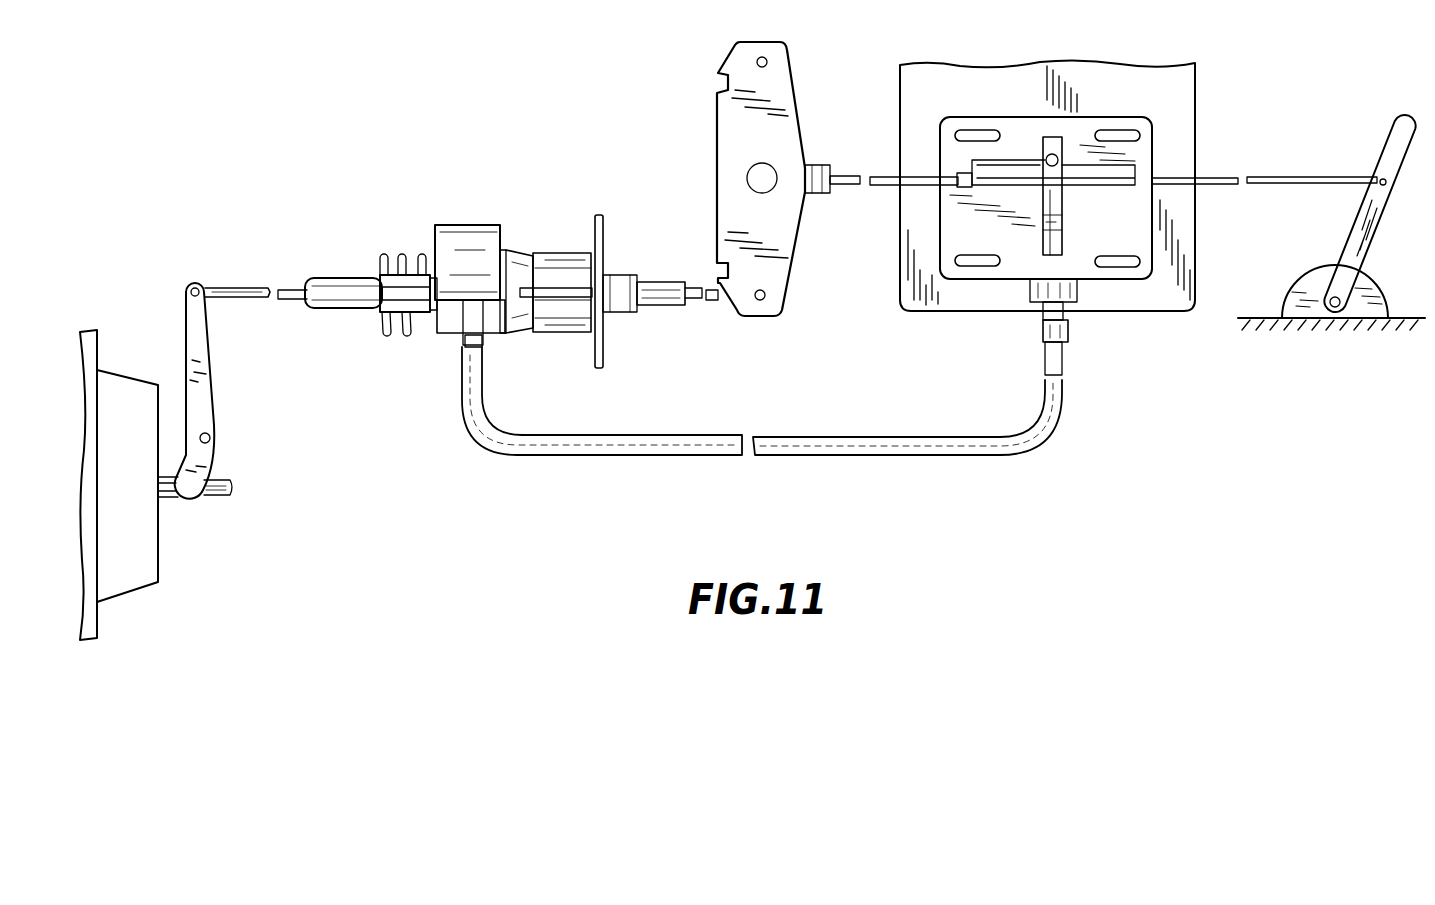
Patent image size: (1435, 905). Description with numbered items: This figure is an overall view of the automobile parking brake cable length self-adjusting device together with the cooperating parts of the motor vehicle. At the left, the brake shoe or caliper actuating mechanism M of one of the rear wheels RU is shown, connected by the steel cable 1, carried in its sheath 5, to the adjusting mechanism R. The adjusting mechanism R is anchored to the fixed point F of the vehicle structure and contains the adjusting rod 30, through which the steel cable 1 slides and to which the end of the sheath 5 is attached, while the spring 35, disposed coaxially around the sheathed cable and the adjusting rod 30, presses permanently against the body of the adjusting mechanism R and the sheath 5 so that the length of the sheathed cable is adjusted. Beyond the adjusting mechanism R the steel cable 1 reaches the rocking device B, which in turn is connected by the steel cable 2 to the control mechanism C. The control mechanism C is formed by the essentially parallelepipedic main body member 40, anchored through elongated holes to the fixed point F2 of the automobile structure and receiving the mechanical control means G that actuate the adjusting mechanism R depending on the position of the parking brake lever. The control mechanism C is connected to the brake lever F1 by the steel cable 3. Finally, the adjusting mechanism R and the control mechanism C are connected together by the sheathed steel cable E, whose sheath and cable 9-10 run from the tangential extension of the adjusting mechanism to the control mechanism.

The rudder unit / wall mount RU is at (158, 312).
The brake shoe or caliper actuating mechanism M is at (228, 403).
The steel cable 1 is at (258, 288).
The sheath 5 is at (334, 277).
The spring 35 is at (404, 262).
The adjusting mechanism R is at (448, 352).
The fixed point F is at (598, 232).
The adjusting rod 30 is at (678, 280).
The rocking device B is at (706, 158).
The steel cable 2 is at (888, 177).
The control mechanism C is at (995, 98).
The fixed point F2 is at (1198, 132).
The mechanical control means G is at (983, 204).
The main body member 40 is at (1100, 117).
The steel cable 3 is at (1298, 177).
The brake lever F1 is at (1332, 257).
The sheathed steel cable E is at (897, 428).
The sheath and steel cable 9-10 is at (1000, 400).